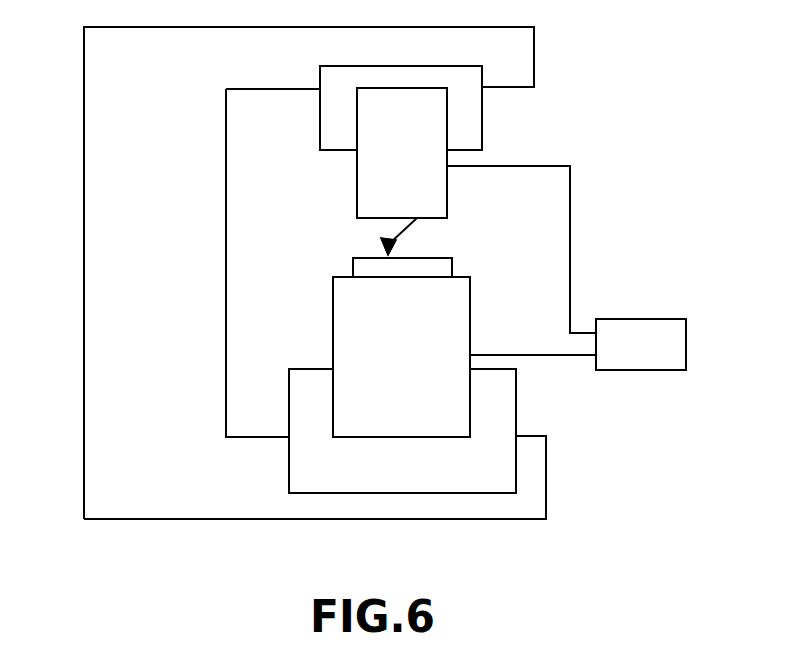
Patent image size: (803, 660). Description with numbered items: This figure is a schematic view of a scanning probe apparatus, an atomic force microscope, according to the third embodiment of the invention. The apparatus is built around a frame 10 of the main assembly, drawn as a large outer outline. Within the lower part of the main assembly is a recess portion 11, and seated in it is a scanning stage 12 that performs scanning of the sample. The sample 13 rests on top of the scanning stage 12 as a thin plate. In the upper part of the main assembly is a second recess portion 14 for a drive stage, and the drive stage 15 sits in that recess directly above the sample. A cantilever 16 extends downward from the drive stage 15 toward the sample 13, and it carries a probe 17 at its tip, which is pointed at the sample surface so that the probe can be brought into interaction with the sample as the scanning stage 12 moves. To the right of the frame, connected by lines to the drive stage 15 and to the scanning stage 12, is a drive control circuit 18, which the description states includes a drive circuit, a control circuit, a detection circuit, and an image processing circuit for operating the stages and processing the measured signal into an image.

The frame 10 is at (120, 472).
The recess portion 11 is at (300, 397).
The scanning stage 12 is at (350, 333).
The sample 13 is at (350, 258).
The recess portion for drive stage 14 is at (483, 76).
The drive stage 15 is at (429, 148).
The cantilever 16 is at (413, 224).
The probe 17 is at (393, 249).
The drive control circuit 18 is at (665, 341).